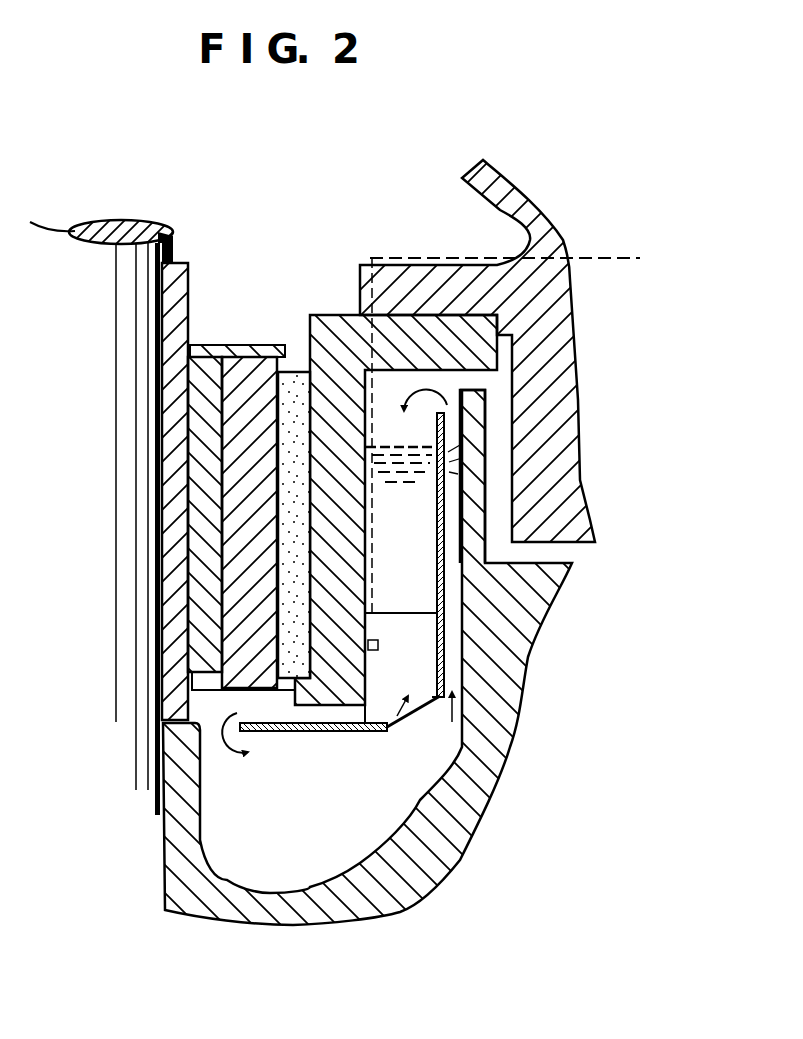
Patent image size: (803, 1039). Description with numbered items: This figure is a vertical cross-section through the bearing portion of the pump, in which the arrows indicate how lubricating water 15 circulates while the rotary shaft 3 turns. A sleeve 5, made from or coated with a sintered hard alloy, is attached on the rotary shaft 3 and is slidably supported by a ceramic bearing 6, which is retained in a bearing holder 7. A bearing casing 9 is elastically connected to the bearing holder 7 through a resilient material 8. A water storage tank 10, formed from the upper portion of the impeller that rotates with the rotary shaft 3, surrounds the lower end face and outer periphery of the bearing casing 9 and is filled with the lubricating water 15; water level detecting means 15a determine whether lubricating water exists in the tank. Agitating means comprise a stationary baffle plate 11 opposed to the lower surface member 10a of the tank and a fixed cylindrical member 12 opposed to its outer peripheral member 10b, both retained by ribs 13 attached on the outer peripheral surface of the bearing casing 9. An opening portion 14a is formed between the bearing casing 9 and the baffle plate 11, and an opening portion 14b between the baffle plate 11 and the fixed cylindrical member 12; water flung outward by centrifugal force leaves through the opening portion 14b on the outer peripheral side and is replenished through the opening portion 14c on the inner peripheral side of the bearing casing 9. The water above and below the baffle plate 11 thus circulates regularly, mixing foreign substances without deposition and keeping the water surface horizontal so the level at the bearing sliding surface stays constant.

The rotary shaft 3 is at (82, 250).
The sleeve 5 is at (182, 262).
The ceramic bearing 6 is at (195, 423).
The bearing holder 7 is at (243, 357).
The resilient material 8 is at (297, 373).
The bearing casing 9 is at (403, 325).
The water storage tank 10 is at (517, 708).
The lower surface member 10a is at (400, 912).
The outer peripheral member 10b is at (432, 583).
The stationary baffle plate 11 is at (270, 732).
The fixed cylindrical member 12 is at (445, 513).
The ribs 13 is at (478, 625).
The opening portion 14a is at (332, 715).
The opening portion 14b is at (420, 703).
The opening portion 14c is at (250, 707).
The lubricating water 15 is at (447, 455).
The water level detecting means 15a is at (376, 651).